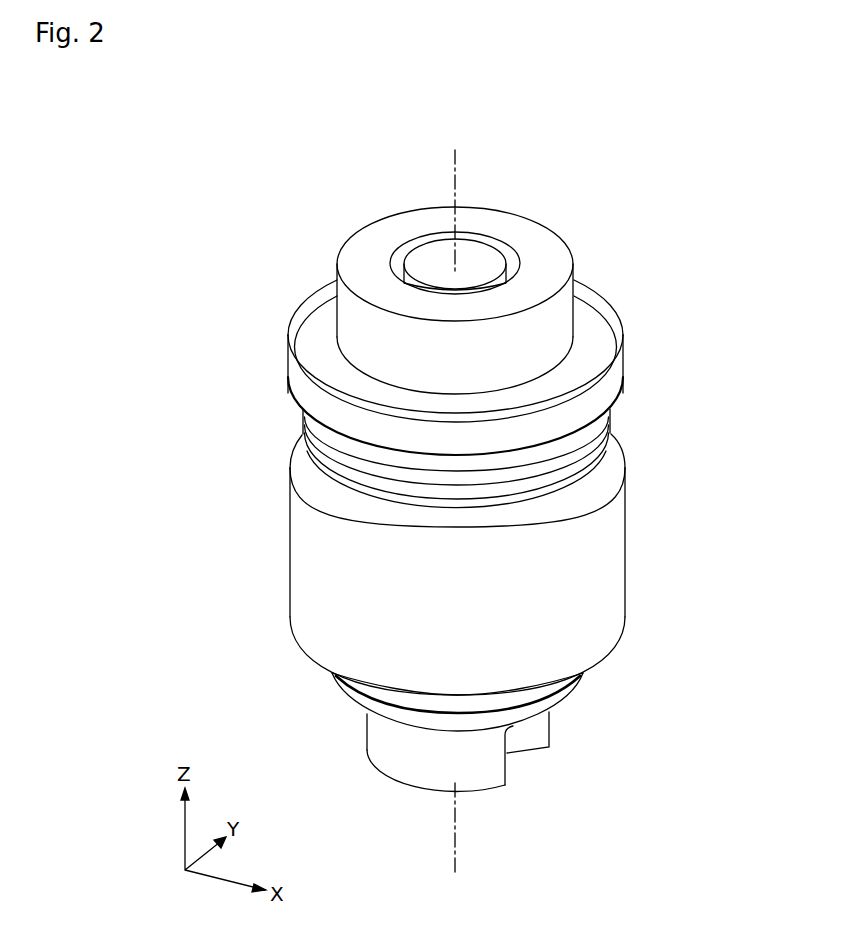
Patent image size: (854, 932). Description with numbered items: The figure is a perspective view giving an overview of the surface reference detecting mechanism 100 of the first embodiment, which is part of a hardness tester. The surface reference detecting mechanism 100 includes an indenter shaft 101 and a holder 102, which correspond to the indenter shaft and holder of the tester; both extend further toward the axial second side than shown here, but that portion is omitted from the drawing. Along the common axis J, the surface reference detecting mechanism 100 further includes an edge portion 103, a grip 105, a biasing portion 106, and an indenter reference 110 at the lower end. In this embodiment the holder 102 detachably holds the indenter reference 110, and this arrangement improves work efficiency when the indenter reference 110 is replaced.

The surface reference detecting mechanism 100 is at (500, 490).
The indenter shaft 101 is at (437, 258).
The holder 102 is at (555, 315).
The edge portion 103 is at (605, 387).
The grip 105 is at (605, 545).
The biasing portion 106 is at (600, 435).
The indenter reference 110 is at (472, 780).
The central axis J is at (452, 183).